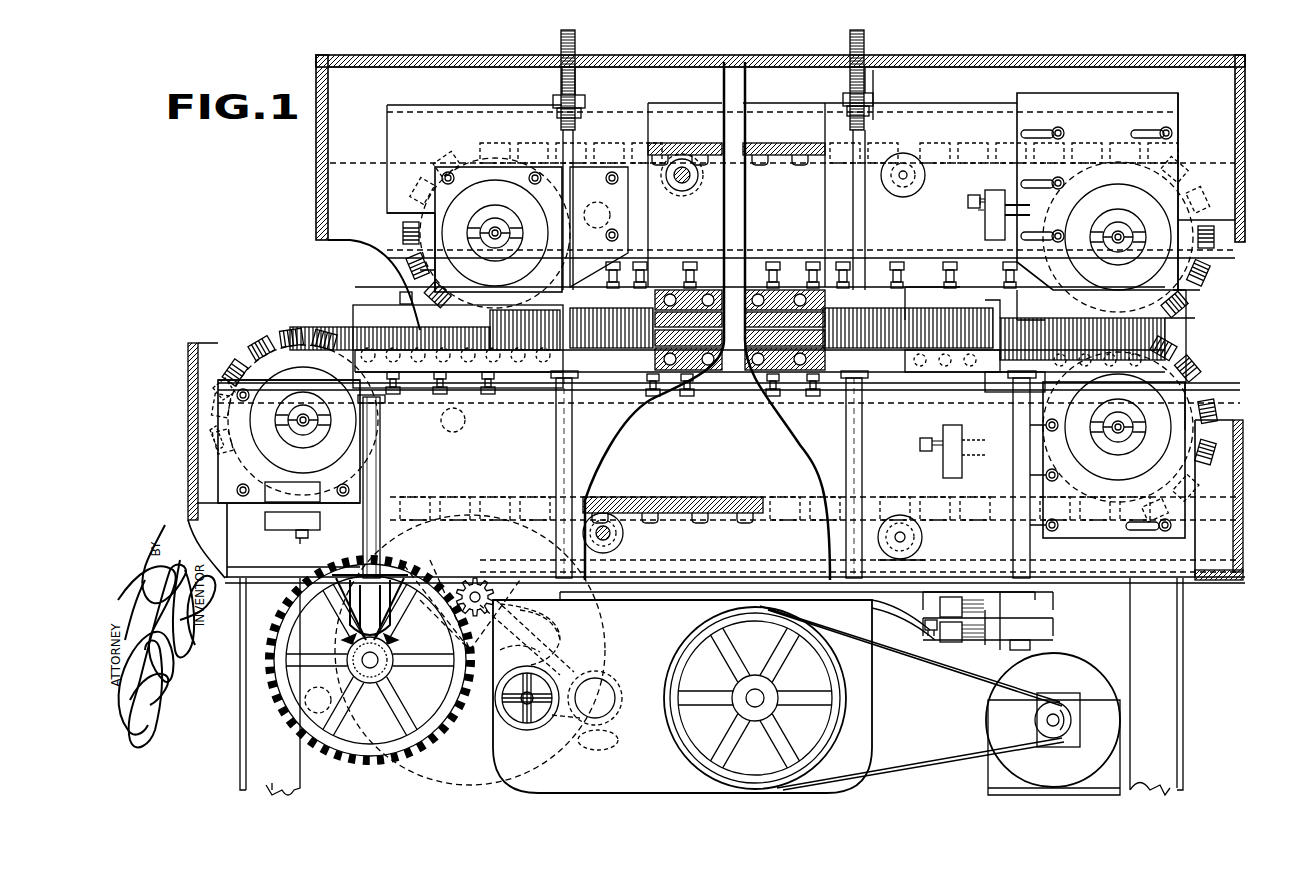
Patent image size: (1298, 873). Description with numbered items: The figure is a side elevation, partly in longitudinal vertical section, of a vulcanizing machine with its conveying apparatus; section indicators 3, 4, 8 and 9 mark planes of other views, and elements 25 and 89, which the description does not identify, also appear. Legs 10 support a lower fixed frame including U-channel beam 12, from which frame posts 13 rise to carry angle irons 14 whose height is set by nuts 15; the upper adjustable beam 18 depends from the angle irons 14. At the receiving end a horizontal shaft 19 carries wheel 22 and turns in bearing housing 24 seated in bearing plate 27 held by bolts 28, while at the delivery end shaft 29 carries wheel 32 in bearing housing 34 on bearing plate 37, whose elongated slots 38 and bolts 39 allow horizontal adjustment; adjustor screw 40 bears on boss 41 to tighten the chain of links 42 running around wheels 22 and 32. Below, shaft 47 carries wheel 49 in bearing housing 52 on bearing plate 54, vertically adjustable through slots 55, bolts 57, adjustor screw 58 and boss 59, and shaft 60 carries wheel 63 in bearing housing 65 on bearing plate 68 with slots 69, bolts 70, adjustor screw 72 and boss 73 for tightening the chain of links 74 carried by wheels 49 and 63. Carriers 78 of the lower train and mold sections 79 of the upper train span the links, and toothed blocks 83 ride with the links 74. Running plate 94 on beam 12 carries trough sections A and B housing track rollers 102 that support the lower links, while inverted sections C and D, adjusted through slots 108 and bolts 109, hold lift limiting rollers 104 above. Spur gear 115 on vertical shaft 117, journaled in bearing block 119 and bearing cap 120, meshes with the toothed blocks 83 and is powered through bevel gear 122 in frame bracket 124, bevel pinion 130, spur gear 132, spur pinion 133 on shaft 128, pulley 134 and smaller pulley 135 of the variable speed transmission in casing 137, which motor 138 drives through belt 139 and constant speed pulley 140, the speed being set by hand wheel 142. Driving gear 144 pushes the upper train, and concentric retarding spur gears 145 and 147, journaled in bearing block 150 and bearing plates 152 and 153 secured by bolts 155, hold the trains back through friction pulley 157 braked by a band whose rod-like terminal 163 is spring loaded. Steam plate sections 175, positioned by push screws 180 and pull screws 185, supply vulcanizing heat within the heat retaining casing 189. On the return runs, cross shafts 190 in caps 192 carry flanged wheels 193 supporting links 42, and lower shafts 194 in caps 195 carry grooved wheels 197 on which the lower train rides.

The section line 3- 3 is at (793, 233).
The section line 4- 4 is at (903, 380).
The section line 8- 8 is at (374, 300).
The section line 9- 9 is at (513, 290).
The legs 10 is at (280, 778).
The U-channel beam 12 is at (1030, 266).
The frame posts 13 is at (561, 40).
The angle irons 14 is at (560, 83).
The nuts 15 is at (577, 95).
The U-channel beam 18 is at (387, 108).
The horizontal shaft 19 is at (493, 240).
The wheel 22 is at (432, 210).
The anti-friction bearing housing 24 is at (495, 216).
The mounting plate 25 is at (592, 175).
The bearing plate 27 is at (475, 167).
The bolts 28 is at (448, 174).
The shaft 29 is at (1115, 236).
The wheel 32 is at (1203, 252).
The anti-friction bearing housing 34 is at (1120, 233).
The bearing plate 37 is at (1130, 100).
The horizontally elongated slots 38 is at (1035, 132).
The bolts 39 is at (1058, 130).
The adjustor screw 40 is at (968, 212).
The projecting boss 41 is at (1035, 200).
The chain of links 42 is at (780, 162).
The shaft 47 is at (309, 413).
The wheel 49 is at (232, 321).
The anti-friction bearing housing 52 is at (343, 420).
The bearing plate 54 is at (240, 419).
The vertically elongated slots 55 is at (220, 391).
The bolts 57 is at (236, 490).
The adjustor screw 58 is at (300, 539).
The boss 59 is at (316, 488).
The shaft 60 is at (1120, 423).
The wheel 63 is at (1153, 365).
The anti-friction bearing housing 65 is at (1130, 432).
The bearing plate 68 is at (1161, 473).
The horizontally elongated slots 69 is at (1047, 530).
The bolts 70 is at (1063, 535).
The adjustor screw 72 is at (923, 438).
The projecting boss 73 is at (970, 453).
The chain of links 74 is at (692, 497).
The carriers 78 is at (785, 147).
The mold sections 79 is at (785, 372).
The toothed blocks 83 is at (405, 230).
The chain 89 is at (243, 342).
The running plate 94 is at (596, 385).
The track rollers 102 is at (452, 420).
The lift limiting rollers 104 is at (596, 215).
The vertically elongated slots 108 is at (910, 286).
The bolts 109 is at (900, 268).
The spur gear 115 is at (355, 326).
The vertical shaft 117 is at (381, 475).
The bearing block 119 is at (438, 378).
The bearing cap 120 is at (400, 306).
The bevel gear 122 is at (345, 643).
The frame bracket 124 is at (430, 658).
The horizontal shaft 128 is at (502, 630).
The bevel pinion 130 is at (317, 700).
The spur gear 132 is at (415, 753).
The spur pinion 133 is at (501, 608).
The pulley 134 is at (475, 715).
The smaller pulley 135 is at (551, 675).
The casing 137 is at (865, 778).
The motor 138 is at (1053, 720).
The belt 139 is at (917, 655).
The constant speed pulley 140 is at (848, 708).
The hand wheel 142 is at (525, 728).
The driving gear 144 is at (490, 392).
The upper spur gear 145 is at (1030, 320).
The lower spur gear 147 is at (1068, 344).
The bearing block 150 is at (1000, 370).
The bearing plate 152 is at (1054, 593).
The bearing plate 153 is at (1052, 622).
The bolts 155 is at (930, 631).
The friction pulley 157 is at (1052, 611).
The rod-like terminal 163 is at (1054, 640).
The steam plate sections 175 is at (700, 398).
The push screws 180 is at (660, 399).
The pull screws 185 is at (685, 397).
The heat retaining casing 189 is at (658, 60).
The cross shafts 190 is at (685, 168).
The caps 192 is at (912, 171).
The flanged wheels 193 is at (677, 165).
The shafts 194 is at (613, 543).
The caps 195 is at (908, 545).
The grooved wheels 197 is at (613, 534).
The lengthwise section A is at (886, 394).
The lengthwise section B is at (898, 375).
The section C is at (873, 282).
The section D is at (925, 270).